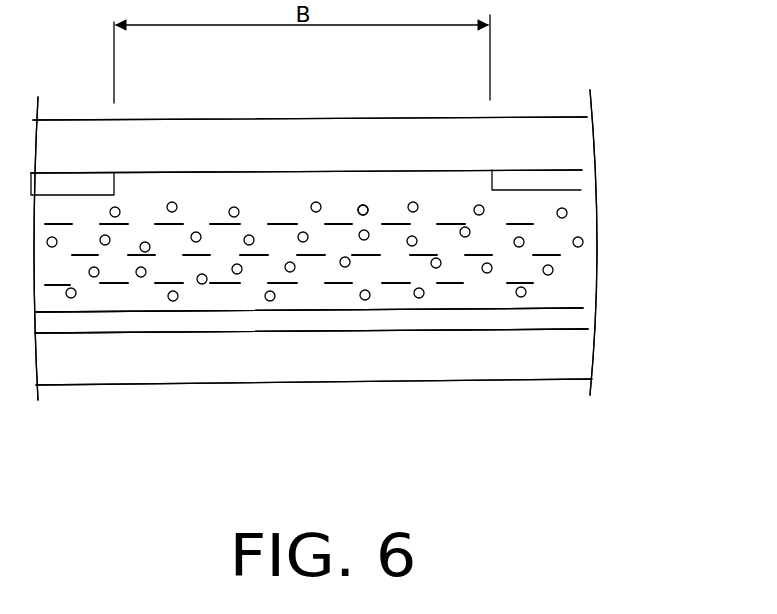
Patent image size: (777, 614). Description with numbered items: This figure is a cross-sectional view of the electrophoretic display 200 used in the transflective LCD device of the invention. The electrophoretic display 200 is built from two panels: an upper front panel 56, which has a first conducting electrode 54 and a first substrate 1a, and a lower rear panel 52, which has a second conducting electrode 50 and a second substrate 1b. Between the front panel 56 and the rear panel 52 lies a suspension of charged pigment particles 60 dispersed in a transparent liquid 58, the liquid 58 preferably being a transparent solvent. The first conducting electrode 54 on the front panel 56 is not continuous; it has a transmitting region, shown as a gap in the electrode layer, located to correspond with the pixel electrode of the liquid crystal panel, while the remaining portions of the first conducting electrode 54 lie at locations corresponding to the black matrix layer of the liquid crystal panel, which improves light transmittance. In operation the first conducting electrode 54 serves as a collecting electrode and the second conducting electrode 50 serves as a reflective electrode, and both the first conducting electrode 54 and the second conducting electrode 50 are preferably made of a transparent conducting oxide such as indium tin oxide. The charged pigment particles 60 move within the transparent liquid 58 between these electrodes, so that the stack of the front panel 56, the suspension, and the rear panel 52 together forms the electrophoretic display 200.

The electrophoretic display 200 is at (282, 100).
The first substrate 1a is at (309, 145).
The second substrate 1b is at (313, 357).
The second conducting electrode 50 is at (397, 318).
The rear panel 52 is at (622, 300).
The first conducting electrode 54 is at (577, 183).
The front panel 56 is at (607, 113).
The transparent liquid 58 is at (424, 230).
The charged pigment particles 60 is at (362, 201).